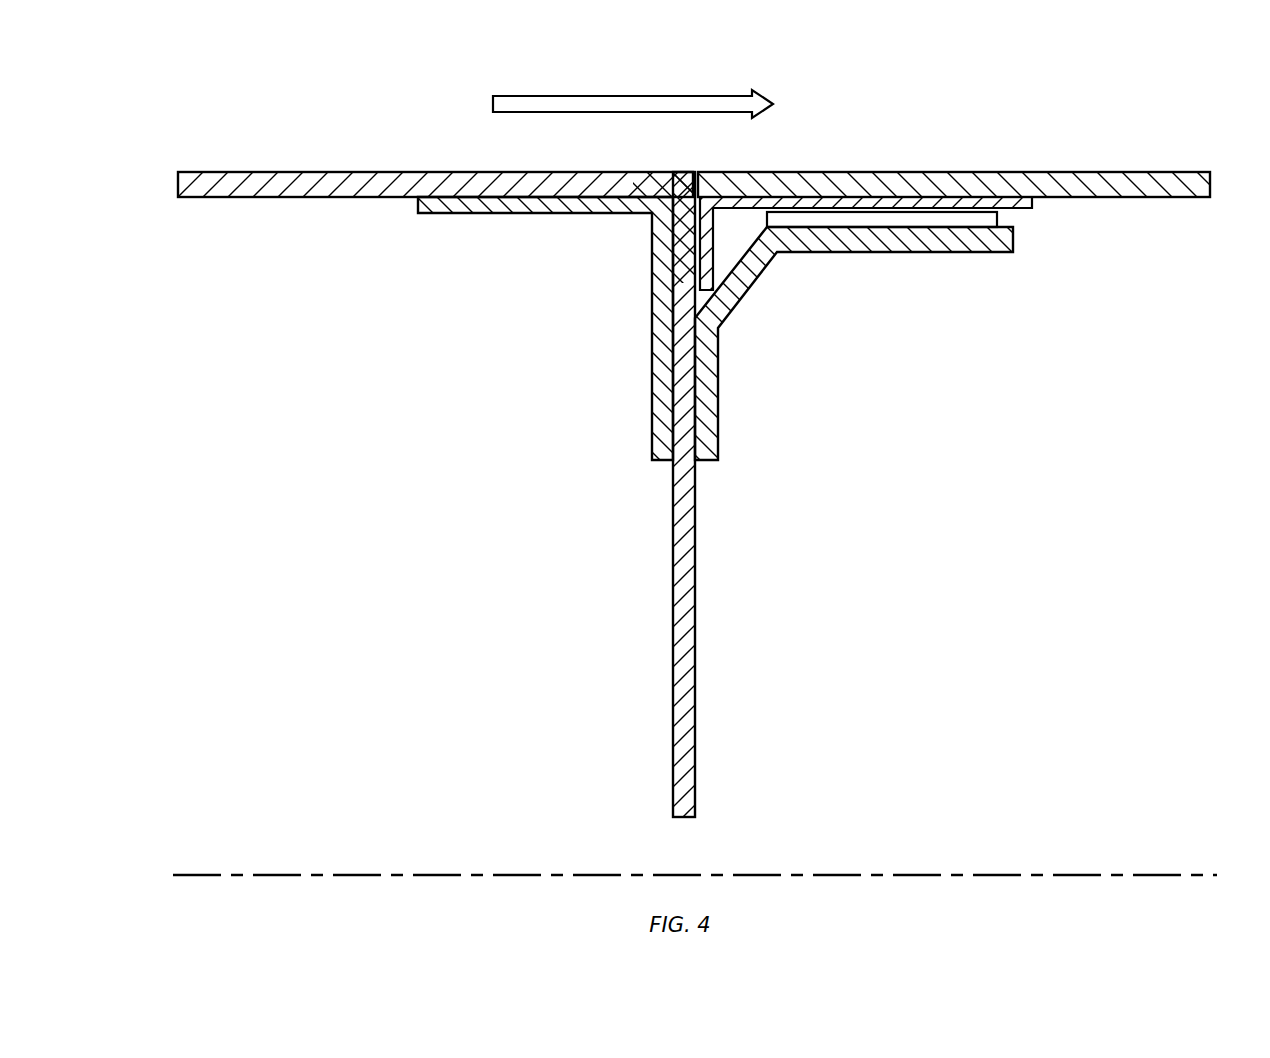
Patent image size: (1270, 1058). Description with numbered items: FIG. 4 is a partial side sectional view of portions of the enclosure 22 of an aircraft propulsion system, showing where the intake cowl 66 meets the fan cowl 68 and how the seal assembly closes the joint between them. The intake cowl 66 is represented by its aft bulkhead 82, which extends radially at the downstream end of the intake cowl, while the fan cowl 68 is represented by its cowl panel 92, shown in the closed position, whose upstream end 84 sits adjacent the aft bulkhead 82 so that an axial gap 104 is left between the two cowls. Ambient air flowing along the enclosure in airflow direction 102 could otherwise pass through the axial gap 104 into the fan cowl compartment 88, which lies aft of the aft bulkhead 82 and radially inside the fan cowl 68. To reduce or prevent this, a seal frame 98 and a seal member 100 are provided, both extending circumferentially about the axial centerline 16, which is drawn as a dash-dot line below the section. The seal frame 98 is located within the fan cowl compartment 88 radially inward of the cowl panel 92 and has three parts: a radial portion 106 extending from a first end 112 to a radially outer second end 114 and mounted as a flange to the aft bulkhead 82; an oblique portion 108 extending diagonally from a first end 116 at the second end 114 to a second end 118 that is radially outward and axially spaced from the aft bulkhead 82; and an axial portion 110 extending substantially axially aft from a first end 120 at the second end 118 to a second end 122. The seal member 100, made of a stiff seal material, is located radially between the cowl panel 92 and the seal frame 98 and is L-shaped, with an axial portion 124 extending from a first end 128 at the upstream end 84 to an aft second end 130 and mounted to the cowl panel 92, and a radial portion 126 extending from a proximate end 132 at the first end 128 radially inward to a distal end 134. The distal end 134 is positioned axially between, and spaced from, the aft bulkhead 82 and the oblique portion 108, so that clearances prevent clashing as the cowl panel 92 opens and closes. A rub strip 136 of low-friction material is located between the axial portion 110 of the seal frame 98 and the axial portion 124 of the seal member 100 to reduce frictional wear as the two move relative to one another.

The axial centerline 16 is at (1192, 872).
The enclosure 22 is at (1073, 88).
The intake cowl 66 is at (307, 108).
The fan cowl 68 is at (1168, 156).
The aft bulkhead 82 is at (680, 520).
The upstream end 84 is at (689, 177).
The fan cowl compartment 88 is at (963, 534).
The cowl panel 92 is at (918, 185).
The seal frame 98 is at (772, 313).
The seal member 100 is at (874, 192).
The airflow direction 102 is at (520, 100).
The axial gap 104 is at (701, 168).
The radial portion 106 is at (718, 400).
The oblique portion 108 is at (748, 302).
The axial portion 110 is at (882, 252).
The first end 112 is at (712, 462).
The second end 114 is at (702, 320).
The first end 116 is at (705, 290).
The second end 118 is at (757, 230).
The first end 120 is at (792, 253).
The second end 122 is at (1015, 240).
The axial portion 124 is at (965, 207).
The radial portion 126 is at (707, 233).
The first end 128 is at (688, 205).
The second end 130 is at (1035, 203).
The proximate end 132 is at (688, 180).
The distal end 134 is at (703, 320).
The rub strip 136 is at (965, 222).